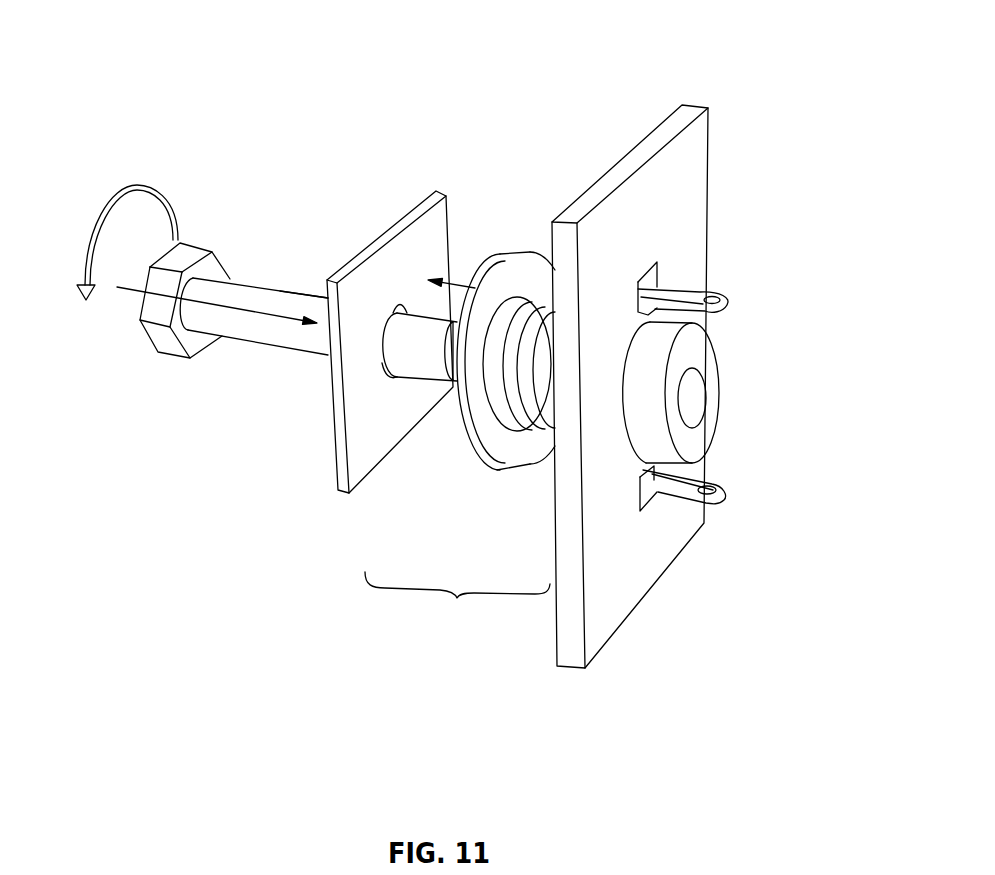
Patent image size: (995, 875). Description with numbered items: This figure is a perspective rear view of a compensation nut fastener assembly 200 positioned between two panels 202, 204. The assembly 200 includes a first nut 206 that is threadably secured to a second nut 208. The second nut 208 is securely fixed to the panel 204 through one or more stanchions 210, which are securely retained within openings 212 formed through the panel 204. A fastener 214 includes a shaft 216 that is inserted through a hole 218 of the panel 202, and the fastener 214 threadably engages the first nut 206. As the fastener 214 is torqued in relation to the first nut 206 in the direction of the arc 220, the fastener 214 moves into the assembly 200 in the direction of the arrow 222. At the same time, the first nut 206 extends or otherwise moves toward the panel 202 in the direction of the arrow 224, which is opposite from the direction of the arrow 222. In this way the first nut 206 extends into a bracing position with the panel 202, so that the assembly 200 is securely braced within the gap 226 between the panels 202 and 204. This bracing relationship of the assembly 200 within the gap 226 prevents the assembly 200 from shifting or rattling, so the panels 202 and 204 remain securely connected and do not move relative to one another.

The compensation nut fastener assembly 200 is at (538, 218).
The panel 202 is at (402, 215).
The panel 204 is at (693, 107).
The first nut 206 is at (513, 253).
The second nut 208 is at (707, 337).
The stanchion 210 is at (685, 297).
The opening 212 is at (650, 283).
The fastener 214 is at (234, 280).
The shaft 216 is at (307, 293).
The hole 218 is at (400, 300).
The arc 220 is at (137, 184).
The arrow 222 is at (252, 313).
The arrow 224 is at (462, 278).
The gap 226 is at (457, 604).